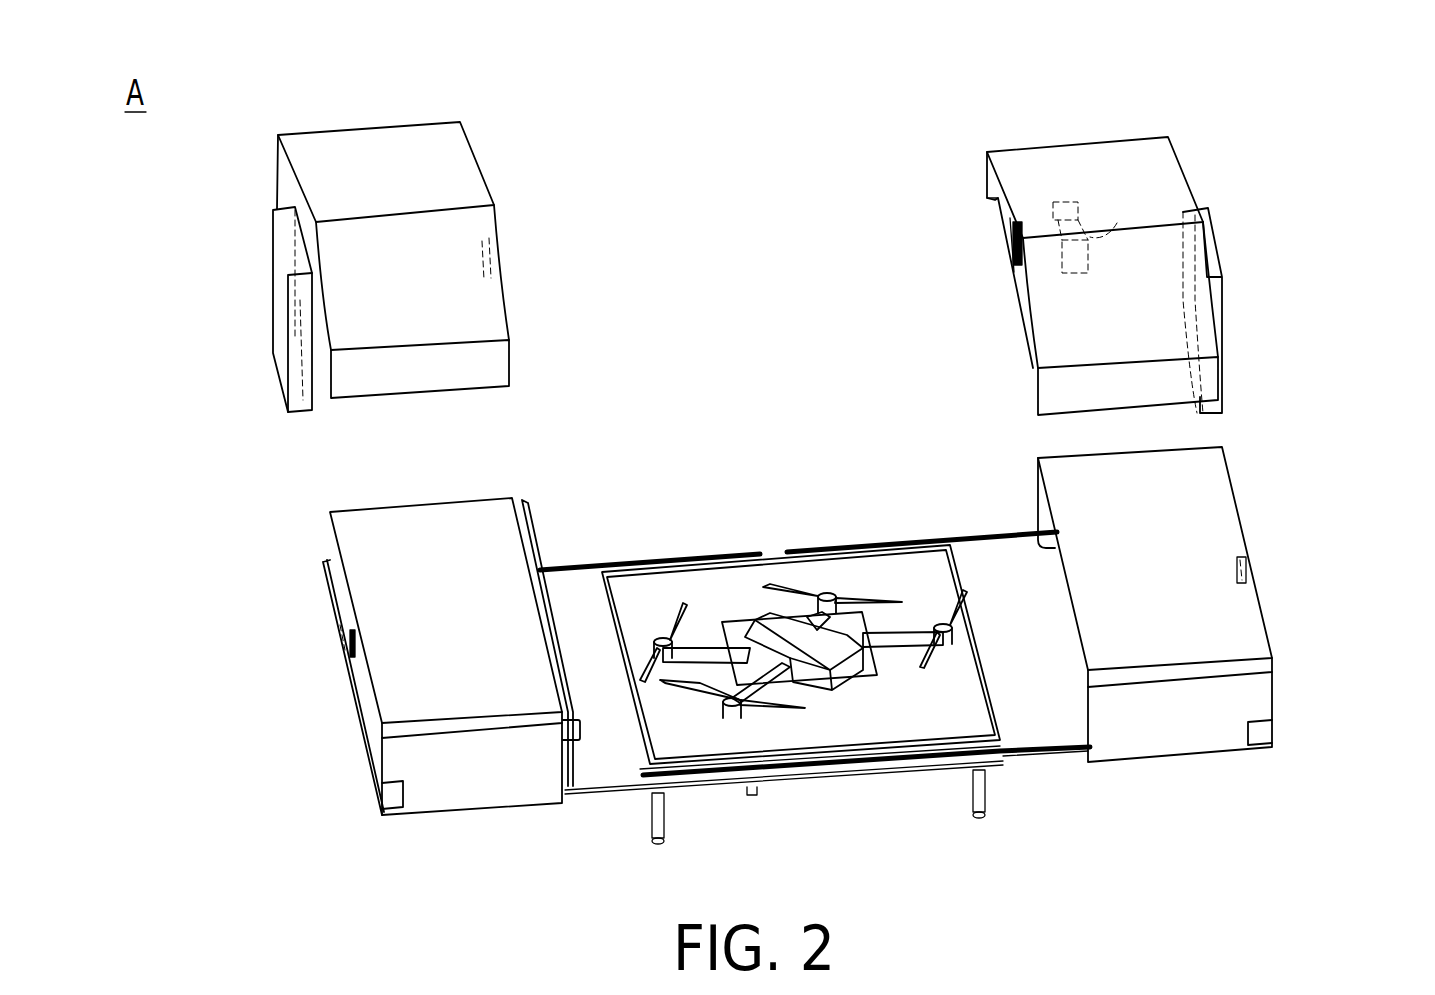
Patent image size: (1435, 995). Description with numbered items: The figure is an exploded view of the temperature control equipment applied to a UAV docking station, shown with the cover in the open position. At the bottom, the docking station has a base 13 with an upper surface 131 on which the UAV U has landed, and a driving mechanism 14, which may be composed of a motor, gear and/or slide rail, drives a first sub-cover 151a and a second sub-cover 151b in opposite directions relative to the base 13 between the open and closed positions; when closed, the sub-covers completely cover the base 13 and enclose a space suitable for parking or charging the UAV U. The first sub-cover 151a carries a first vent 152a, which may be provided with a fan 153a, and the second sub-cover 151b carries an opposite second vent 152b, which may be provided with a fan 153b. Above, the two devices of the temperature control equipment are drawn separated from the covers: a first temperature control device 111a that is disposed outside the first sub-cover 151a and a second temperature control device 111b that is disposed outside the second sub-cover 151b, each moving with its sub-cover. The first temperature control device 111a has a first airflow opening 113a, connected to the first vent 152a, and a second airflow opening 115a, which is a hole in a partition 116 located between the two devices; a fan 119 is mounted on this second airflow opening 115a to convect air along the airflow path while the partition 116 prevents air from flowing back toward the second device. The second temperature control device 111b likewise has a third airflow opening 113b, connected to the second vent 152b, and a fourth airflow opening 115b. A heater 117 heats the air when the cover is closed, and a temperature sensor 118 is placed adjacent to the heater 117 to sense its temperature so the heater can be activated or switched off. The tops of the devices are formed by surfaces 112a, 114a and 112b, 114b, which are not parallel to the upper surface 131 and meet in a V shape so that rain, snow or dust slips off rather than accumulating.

The first temperature control device 111a is at (1190, 188).
The second temperature control device 111b is at (285, 188).
The surface 112a is at (1060, 318).
The surface 112b is at (467, 290).
The first airflow opening 113a is at (1200, 339).
The third airflow opening 113b is at (273, 345).
The surface 114a is at (1015, 170).
The surface 114b is at (426, 153).
The second airflow opening 115a is at (1013, 228).
The fourth airflow opening 115b is at (482, 265).
The partition 116 is at (996, 210).
The heater 117 is at (1117, 223).
The temperature sensor 118 is at (1053, 202).
The fan 119 is at (1013, 252).
The base 13 is at (823, 782).
The upper surface 131 is at (880, 715).
The driving mechanism 14 is at (600, 795).
The first sub-cover 151a is at (1180, 735).
The second sub-cover 151b is at (450, 793).
The first vent 152a is at (1245, 560).
The second vent 152b is at (355, 640).
The fan 153a is at (1250, 568).
The fan 153b is at (345, 635).
The UAV U is at (775, 615).